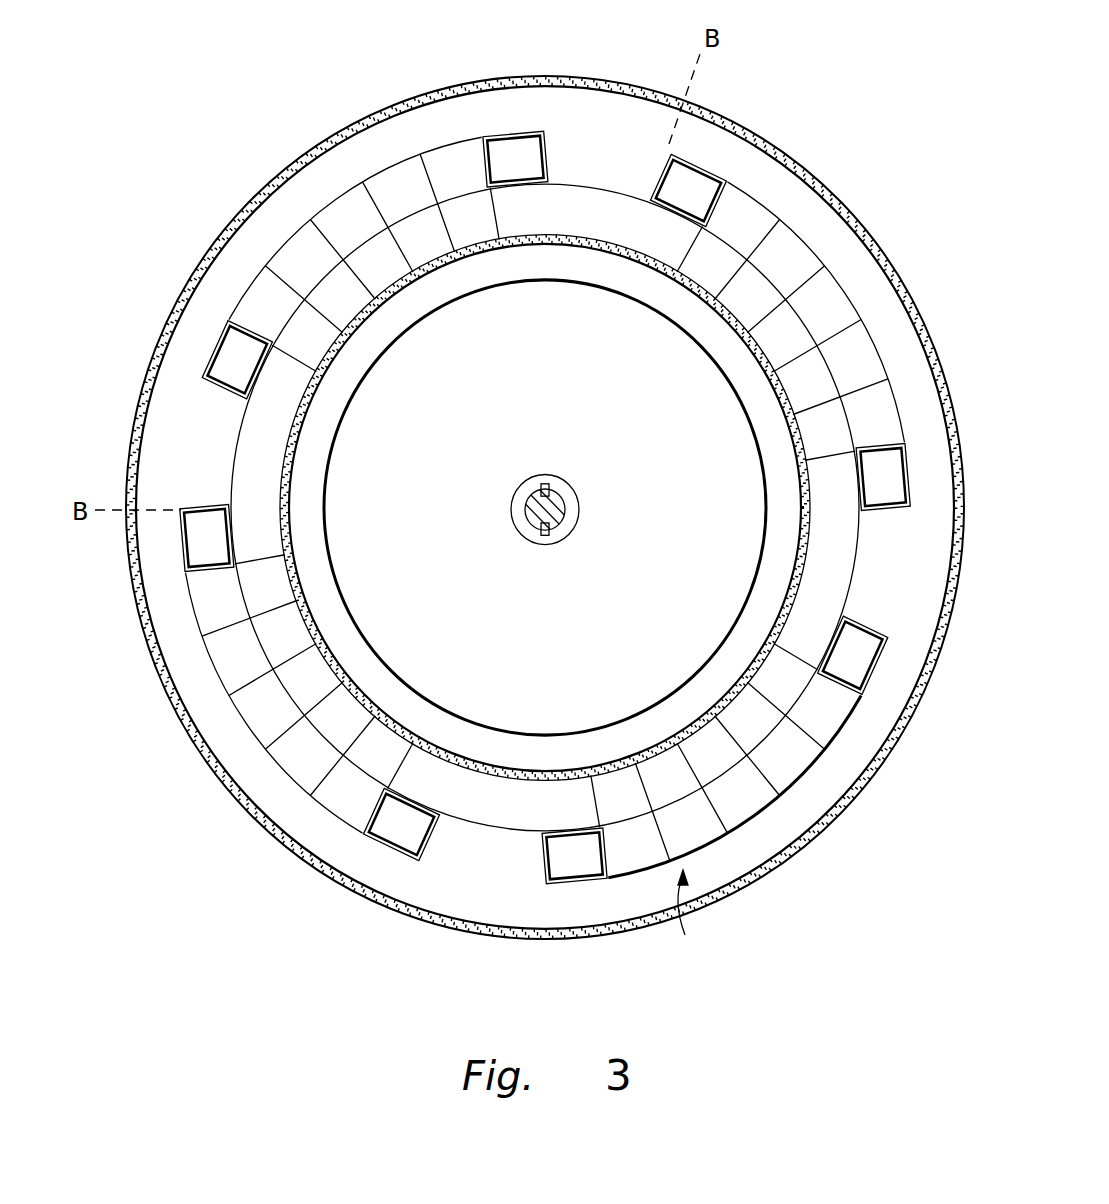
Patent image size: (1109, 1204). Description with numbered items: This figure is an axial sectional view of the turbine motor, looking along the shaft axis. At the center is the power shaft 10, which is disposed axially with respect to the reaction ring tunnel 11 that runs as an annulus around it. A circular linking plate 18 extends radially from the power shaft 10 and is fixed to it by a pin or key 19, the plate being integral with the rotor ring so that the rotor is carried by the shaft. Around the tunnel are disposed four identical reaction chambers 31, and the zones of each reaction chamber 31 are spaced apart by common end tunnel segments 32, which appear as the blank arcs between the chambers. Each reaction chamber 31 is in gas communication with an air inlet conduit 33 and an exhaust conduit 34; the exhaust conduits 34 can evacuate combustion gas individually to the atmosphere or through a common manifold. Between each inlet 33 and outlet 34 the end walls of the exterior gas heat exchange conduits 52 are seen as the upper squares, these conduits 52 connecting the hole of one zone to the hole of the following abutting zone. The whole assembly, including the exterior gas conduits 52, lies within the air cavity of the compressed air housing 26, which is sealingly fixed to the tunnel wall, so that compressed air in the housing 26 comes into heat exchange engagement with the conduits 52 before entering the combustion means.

The power shaft 10 is at (537, 490).
The reaction ring tunnel 11 is at (697, 916).
The circular linking plate 18 is at (416, 657).
The key 19 is at (552, 488).
The compressed air housing 26 is at (884, 188).
The reaction chamber 31 is at (385, 172).
The common end tunnel segment 32 is at (580, 183).
The air inlet conduit 33 is at (510, 160).
The exhaust conduit 34 is at (692, 183).
The exterior gas heat exchange conduit 52 is at (258, 290).